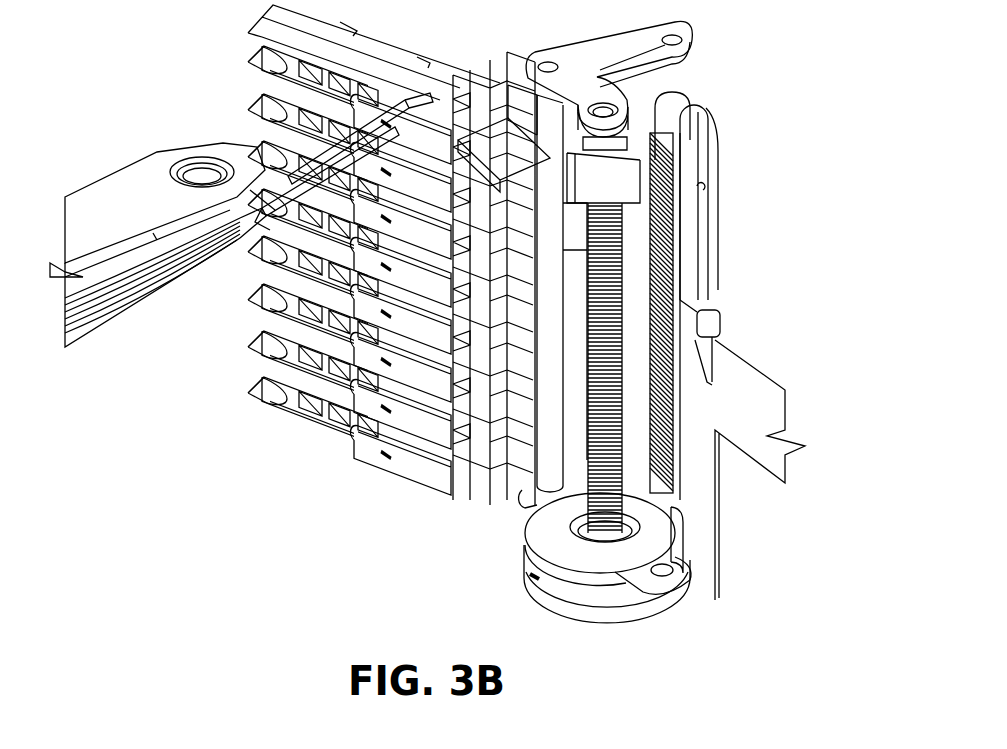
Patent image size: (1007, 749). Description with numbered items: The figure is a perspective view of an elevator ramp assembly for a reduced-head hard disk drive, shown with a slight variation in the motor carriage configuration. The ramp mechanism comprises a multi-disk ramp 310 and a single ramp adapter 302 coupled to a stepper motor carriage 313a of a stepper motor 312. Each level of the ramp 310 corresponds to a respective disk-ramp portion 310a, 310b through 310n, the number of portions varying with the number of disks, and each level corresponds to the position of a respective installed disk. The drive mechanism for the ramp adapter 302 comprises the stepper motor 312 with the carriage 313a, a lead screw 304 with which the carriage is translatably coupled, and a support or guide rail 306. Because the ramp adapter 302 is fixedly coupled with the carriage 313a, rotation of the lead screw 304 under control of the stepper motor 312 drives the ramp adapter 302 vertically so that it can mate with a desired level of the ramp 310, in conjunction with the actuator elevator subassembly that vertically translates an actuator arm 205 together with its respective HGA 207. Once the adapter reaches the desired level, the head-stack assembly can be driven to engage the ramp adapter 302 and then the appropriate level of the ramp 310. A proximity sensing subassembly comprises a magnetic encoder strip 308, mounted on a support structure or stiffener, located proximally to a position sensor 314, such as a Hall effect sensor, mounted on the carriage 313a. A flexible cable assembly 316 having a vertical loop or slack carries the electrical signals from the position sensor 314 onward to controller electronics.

The actuator arm 205 is at (151, 213).
The HGA 207 is at (302, 137).
The ramp adapter 302 is at (510, 127).
The lead screw 304 is at (612, 532).
The guide rail 306 is at (522, 490).
The magnetic encoder strip 308 is at (660, 412).
The multi-disk ramp 310 is at (297, 38).
The disk-ramp portion 310a is at (258, 390).
The disk-ramp portion 310b is at (258, 343).
The disk-ramp portion 310n is at (263, 62).
The stepper motor 312 is at (625, 610).
The stepper motor carriage 313a is at (618, 190).
The position sensor 314 is at (653, 125).
The flexible cable assembly 316 is at (703, 187).